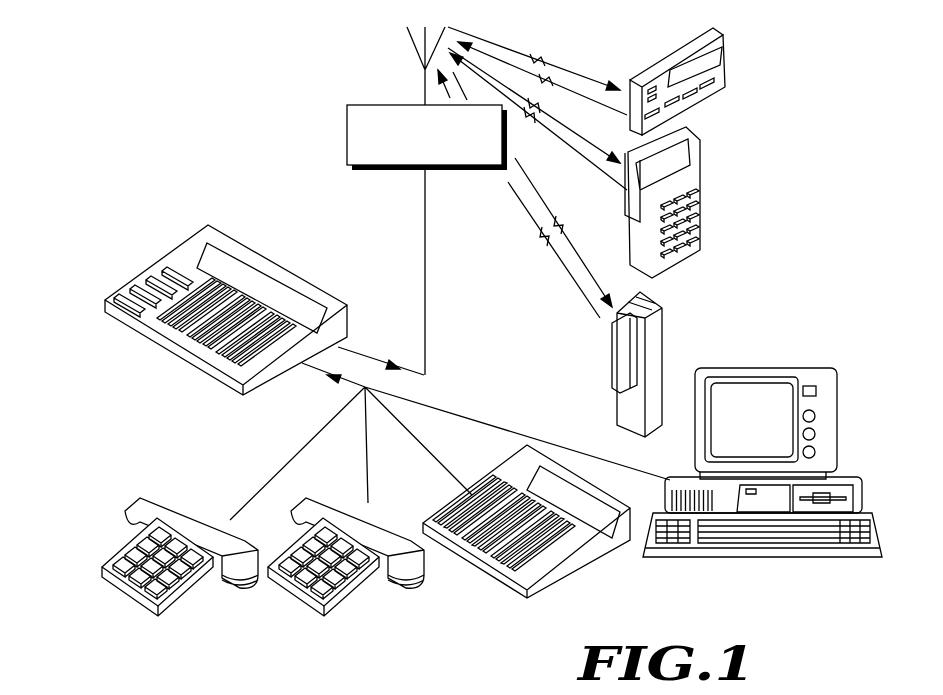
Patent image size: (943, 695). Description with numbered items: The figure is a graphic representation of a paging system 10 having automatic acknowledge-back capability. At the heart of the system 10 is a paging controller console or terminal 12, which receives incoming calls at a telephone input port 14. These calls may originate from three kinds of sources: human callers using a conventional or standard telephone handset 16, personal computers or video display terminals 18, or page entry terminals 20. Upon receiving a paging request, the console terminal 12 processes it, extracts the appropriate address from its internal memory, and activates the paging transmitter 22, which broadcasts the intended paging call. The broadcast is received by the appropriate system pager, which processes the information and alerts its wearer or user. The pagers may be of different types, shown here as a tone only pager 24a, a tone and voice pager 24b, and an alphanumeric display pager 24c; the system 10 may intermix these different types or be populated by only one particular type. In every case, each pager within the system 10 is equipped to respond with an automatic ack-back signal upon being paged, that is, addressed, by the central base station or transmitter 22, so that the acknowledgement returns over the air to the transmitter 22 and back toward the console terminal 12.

The paging system 10 is at (664, 627).
The paging controller console or terminal 12 is at (185, 272).
The telephone input port 14 is at (305, 366).
The telephone handset 16 is at (168, 497).
The personal computer or video display terminal 18 is at (770, 382).
The page entry terminal 20 is at (450, 512).
The paging transmitter 22 is at (347, 108).
The tone only pager 24a is at (656, 333).
The tone and voice pager 24b is at (698, 200).
The alphanumeric display pager 24c is at (672, 62).